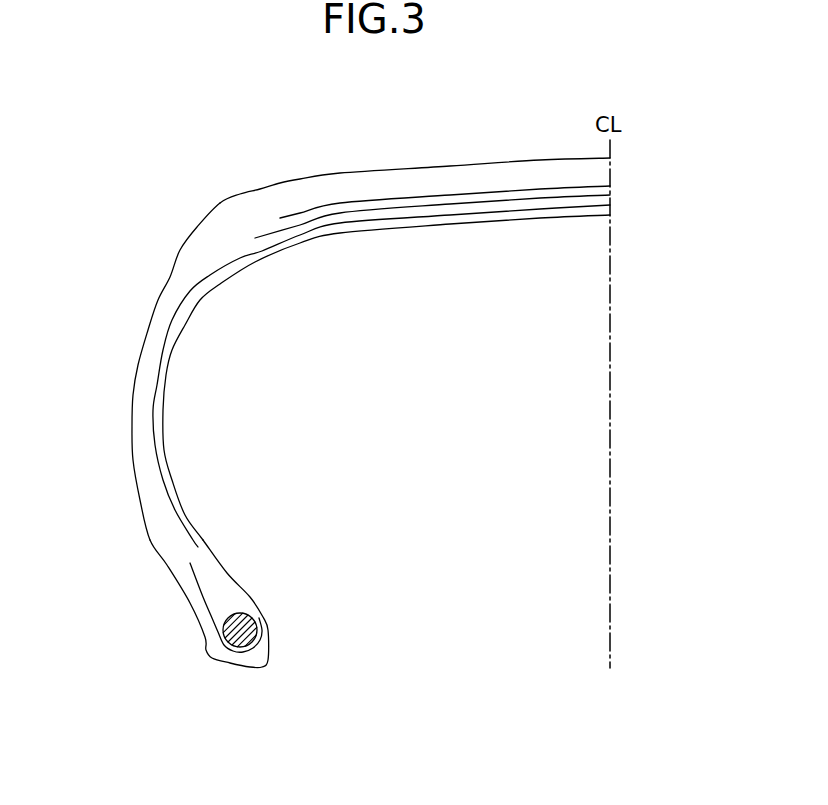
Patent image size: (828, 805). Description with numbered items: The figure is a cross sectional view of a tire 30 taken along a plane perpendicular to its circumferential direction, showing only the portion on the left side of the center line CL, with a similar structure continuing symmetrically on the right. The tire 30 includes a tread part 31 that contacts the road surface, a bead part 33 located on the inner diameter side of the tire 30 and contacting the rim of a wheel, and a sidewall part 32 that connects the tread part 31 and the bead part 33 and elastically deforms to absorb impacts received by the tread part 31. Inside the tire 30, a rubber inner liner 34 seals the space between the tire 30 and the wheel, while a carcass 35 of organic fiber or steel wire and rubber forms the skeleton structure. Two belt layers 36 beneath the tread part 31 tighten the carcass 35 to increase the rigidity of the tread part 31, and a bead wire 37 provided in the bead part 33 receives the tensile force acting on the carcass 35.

The tire 30 is at (378, 384).
The tread part 31 is at (375, 159).
The sidewall part 32 is at (143, 308).
The bead part 33 is at (192, 638).
The inner liner 34 is at (373, 231).
The carcass 35 is at (240, 259).
The belt layer 36 is at (595, 185).
The bead wire 37 is at (256, 626).